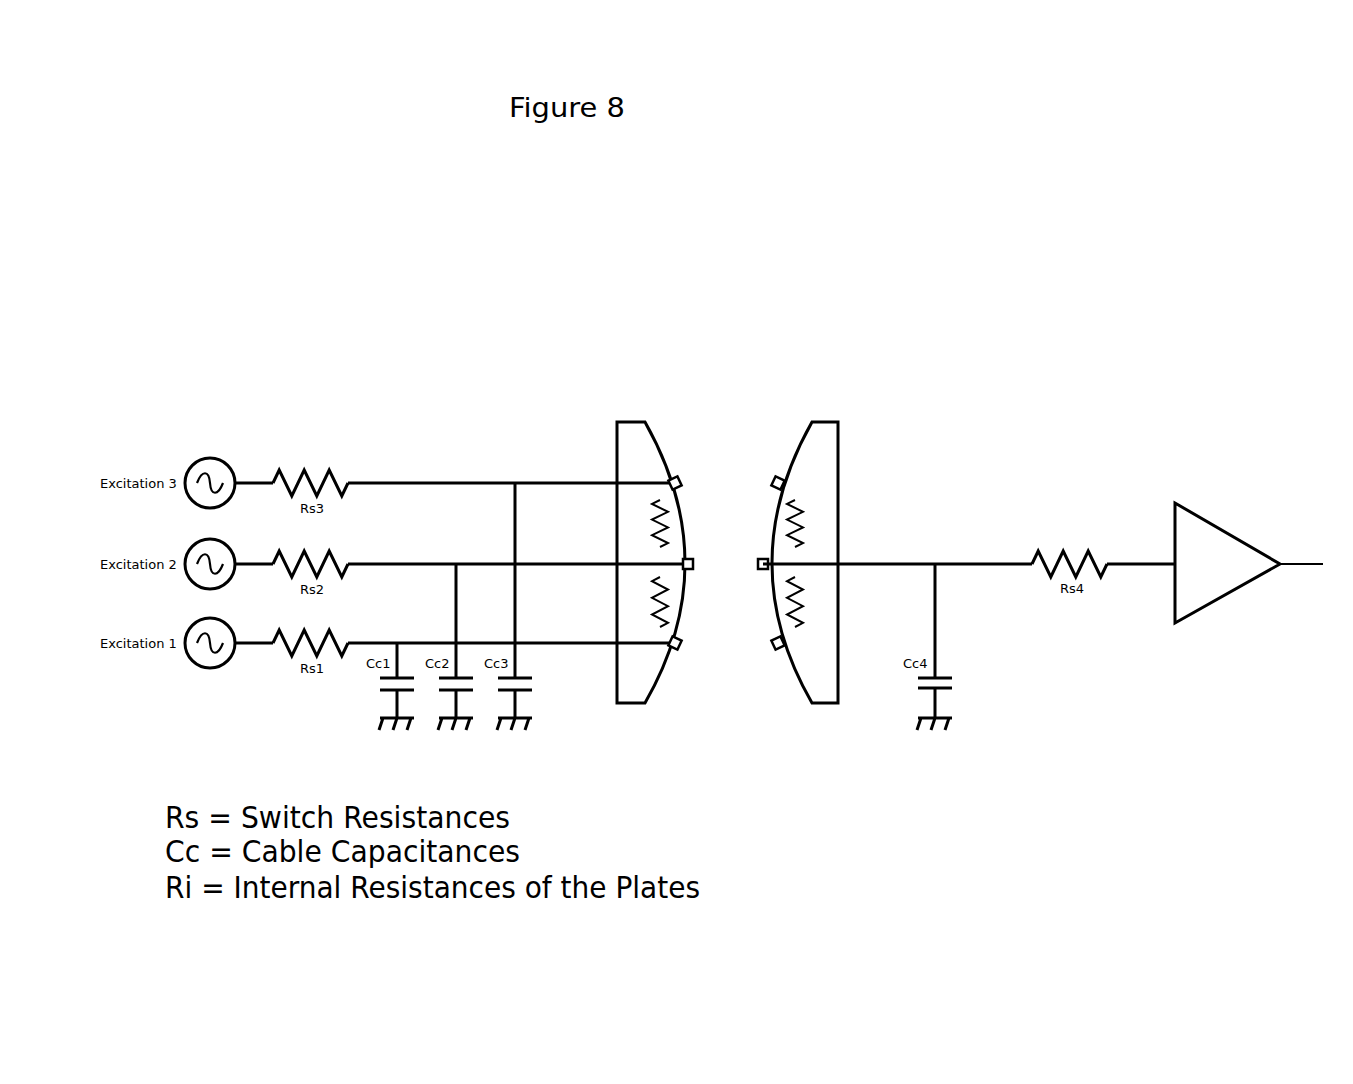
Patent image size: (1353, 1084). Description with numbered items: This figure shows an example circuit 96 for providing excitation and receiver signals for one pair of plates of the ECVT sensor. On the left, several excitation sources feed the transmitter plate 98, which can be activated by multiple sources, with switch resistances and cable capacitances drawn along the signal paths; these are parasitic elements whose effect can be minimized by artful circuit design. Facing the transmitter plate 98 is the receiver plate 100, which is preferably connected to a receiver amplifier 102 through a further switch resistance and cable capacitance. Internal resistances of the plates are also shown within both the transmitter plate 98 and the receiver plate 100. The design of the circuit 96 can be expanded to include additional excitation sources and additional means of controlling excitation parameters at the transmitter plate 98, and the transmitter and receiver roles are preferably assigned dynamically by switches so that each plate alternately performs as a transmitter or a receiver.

The circuit 96 is at (922, 354).
The transmitter plate 98 is at (628, 432).
The receiver plate 100 is at (828, 496).
The receiver amplifier 102 is at (1188, 526).